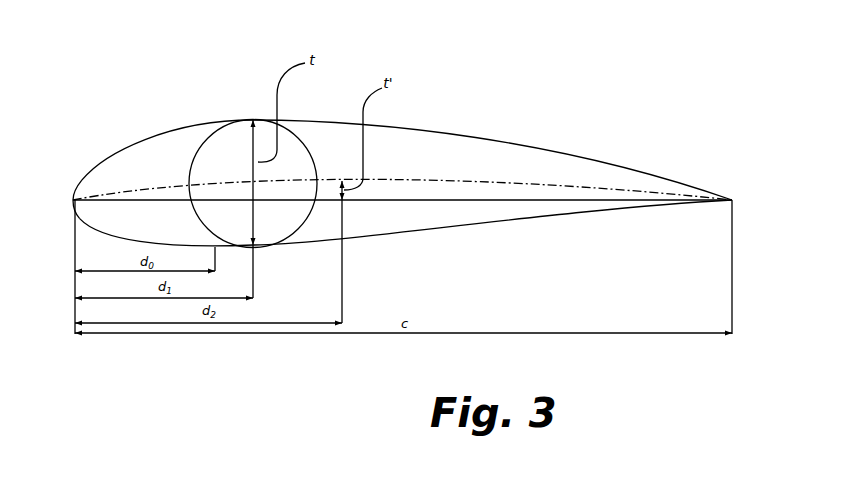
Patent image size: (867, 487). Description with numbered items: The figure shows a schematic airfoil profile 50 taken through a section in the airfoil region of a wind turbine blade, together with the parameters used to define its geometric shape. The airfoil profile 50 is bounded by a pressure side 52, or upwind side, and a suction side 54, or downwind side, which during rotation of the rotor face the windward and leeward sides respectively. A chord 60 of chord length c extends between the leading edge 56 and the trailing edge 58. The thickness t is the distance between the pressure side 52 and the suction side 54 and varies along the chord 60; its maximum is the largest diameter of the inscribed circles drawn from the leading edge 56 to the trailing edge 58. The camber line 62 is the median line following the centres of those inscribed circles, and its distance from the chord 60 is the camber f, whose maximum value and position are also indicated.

The airfoil profile 50 is at (390, 169).
The pressure side 52 is at (533, 222).
The suction side 54 is at (480, 136).
The leading edge 56 is at (72, 200).
The trailing edge 58 is at (732, 197).
The chord 60 is at (563, 200).
The camber line 62 is at (394, 180).